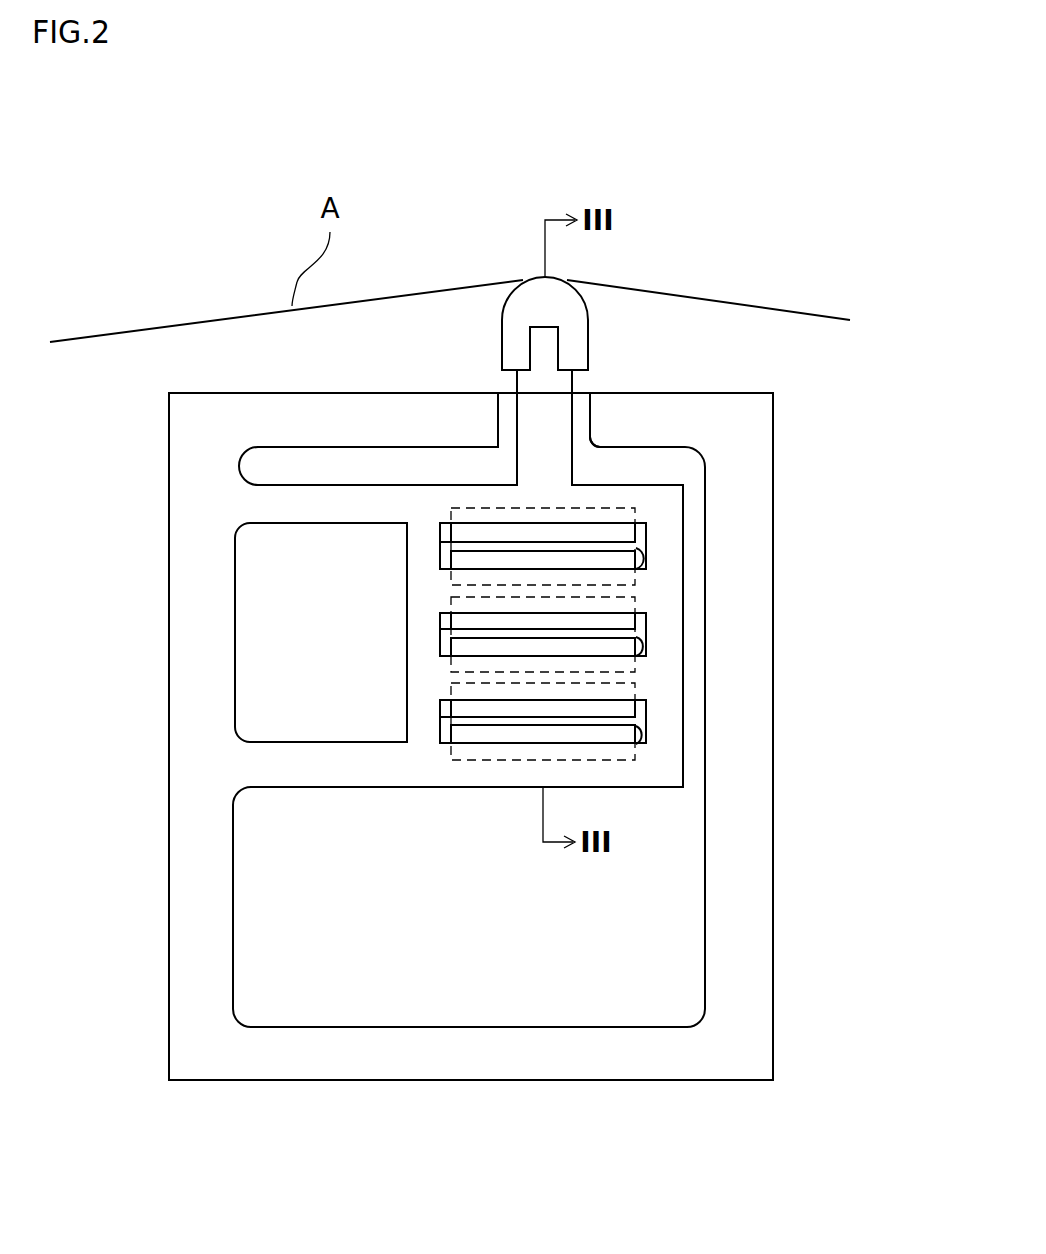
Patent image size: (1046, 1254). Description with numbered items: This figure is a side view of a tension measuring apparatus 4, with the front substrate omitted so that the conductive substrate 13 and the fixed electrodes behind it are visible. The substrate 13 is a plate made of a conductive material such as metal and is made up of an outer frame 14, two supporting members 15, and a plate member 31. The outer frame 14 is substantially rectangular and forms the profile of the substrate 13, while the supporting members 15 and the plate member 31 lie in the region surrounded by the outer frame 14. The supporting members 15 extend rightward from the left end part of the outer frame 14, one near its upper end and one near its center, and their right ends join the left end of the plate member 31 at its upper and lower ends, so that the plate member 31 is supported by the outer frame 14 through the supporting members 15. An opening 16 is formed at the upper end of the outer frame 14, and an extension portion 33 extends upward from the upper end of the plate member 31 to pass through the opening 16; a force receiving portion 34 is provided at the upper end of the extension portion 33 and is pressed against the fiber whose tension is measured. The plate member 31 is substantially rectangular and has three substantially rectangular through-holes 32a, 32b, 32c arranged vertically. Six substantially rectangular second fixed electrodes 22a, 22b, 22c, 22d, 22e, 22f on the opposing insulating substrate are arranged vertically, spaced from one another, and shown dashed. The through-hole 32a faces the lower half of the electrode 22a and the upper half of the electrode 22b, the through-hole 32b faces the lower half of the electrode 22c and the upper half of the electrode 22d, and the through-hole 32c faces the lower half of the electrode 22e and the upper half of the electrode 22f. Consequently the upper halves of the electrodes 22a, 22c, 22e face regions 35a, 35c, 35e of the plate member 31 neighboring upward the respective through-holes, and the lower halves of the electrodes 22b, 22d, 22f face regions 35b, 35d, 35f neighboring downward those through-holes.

The tension measuring apparatus 4 is at (805, 380).
The substrate 13 is at (166, 463).
The outer frame 14 is at (195, 642).
The supporting member 15 is at (280, 508).
The opening 16 is at (606, 452).
The electrode 22a is at (465, 533).
The electrode 22b is at (462, 562).
The electrode 22c is at (462, 615).
The electrode 22d is at (462, 650).
The electrode 22e is at (462, 705).
The electrode 22f is at (462, 737).
The plate member 31 is at (672, 535).
The through-hole 32a is at (640, 567).
The through-hole 32b is at (633, 650).
The through-hole 32c is at (636, 740).
The extension portion 33 is at (537, 408).
The force receiving portion 34 is at (572, 318).
The region 35a is at (625, 520).
The region 35b is at (620, 579).
The region 35c is at (603, 605).
The region 35d is at (620, 665).
The region 35e is at (620, 693).
The region 35f is at (613, 753).